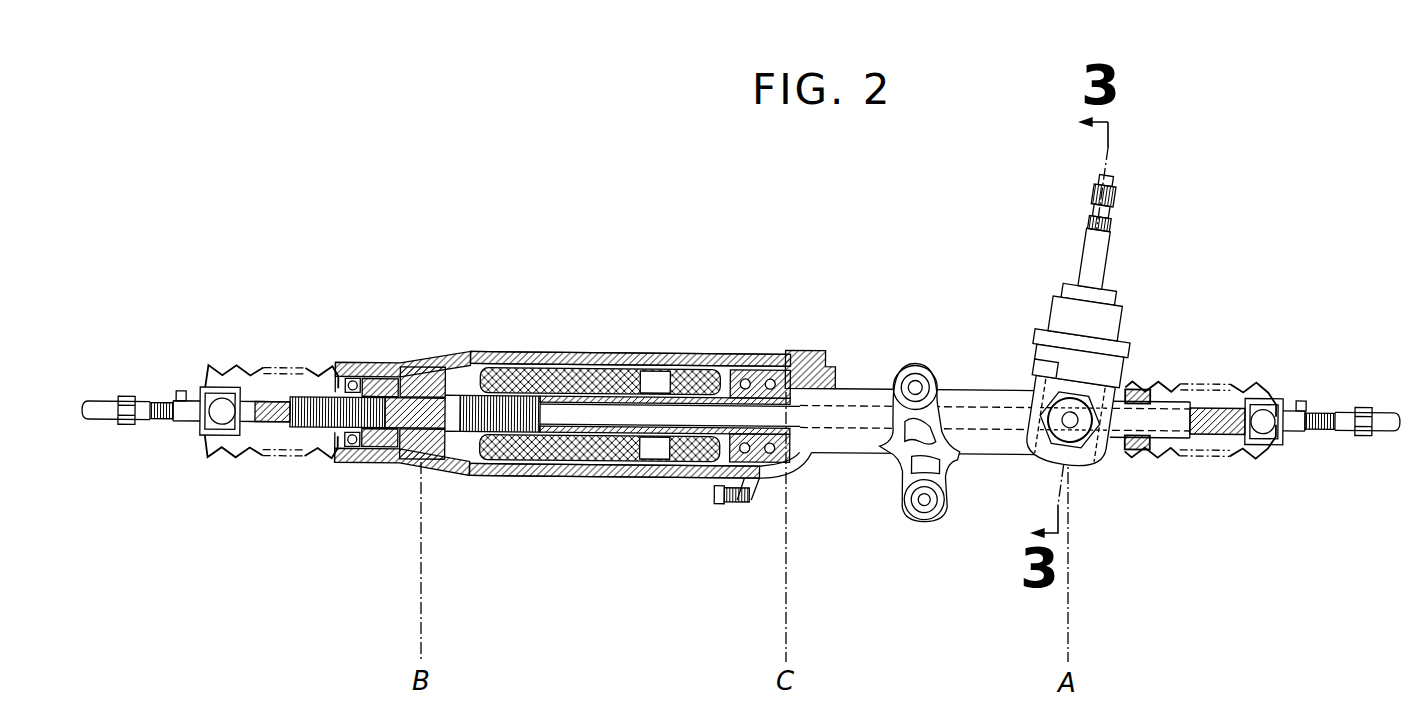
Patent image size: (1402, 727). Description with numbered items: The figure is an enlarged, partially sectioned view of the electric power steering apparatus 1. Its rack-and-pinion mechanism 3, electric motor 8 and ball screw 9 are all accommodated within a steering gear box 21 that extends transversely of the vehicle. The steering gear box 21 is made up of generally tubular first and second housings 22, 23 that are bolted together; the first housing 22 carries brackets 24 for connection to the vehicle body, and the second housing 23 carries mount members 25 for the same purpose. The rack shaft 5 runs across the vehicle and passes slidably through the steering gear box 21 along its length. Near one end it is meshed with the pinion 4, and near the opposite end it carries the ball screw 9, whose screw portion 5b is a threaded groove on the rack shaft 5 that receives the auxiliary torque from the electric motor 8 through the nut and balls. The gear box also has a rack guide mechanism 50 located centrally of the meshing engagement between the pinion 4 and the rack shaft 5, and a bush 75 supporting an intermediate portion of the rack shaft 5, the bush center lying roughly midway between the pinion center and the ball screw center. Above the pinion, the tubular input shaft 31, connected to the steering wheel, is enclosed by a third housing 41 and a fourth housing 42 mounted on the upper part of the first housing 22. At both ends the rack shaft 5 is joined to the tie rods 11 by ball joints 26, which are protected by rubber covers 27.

The electric power steering apparatus 1 is at (608, 145).
The rack-and-pinion mechanism 3 is at (1313, 555).
The pinion 4 is at (1100, 443).
The rack shaft 5 is at (1163, 425).
The screw portion 5b is at (330, 432).
The electric motor 8 is at (548, 350).
The ball screw 9 is at (410, 372).
The tie rods 11 is at (136, 400).
The steering gear box 21 is at (1000, 383).
The first housing 22 is at (748, 488).
The second housing 23 is at (613, 353).
The brackets 24 is at (905, 350).
The mount members 25 is at (378, 373).
The ball joints 26 is at (240, 393).
The rubber covers 27 is at (191, 383).
The input shaft 31 is at (1105, 222).
The third housing 41 is at (1122, 350).
The fourth housing 42 is at (1118, 316).
The rack guide mechanism 50 is at (1093, 445).
The bush 75 is at (792, 388).